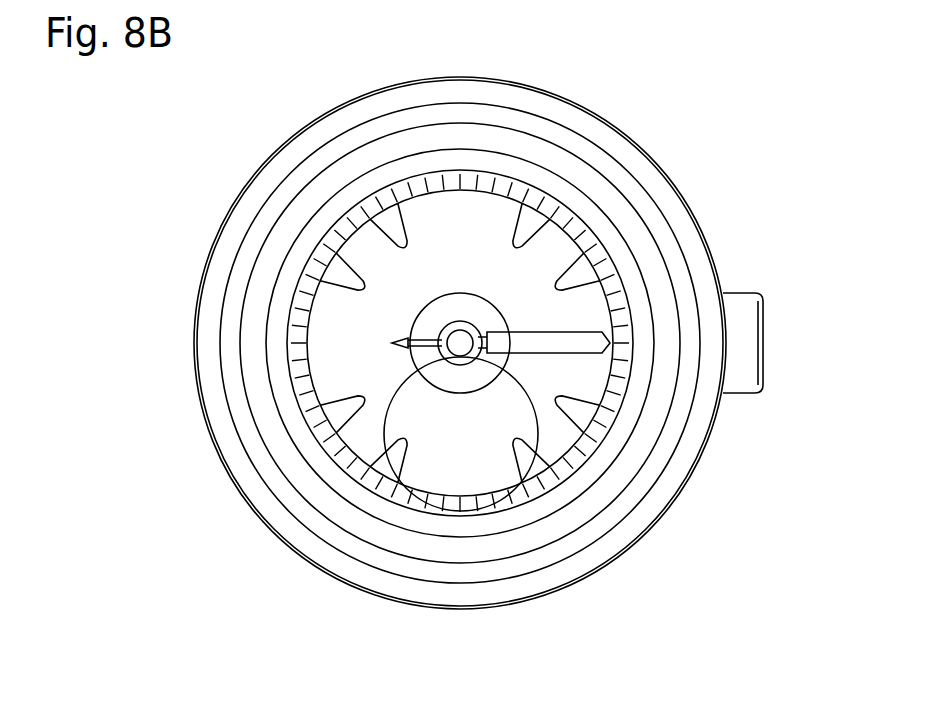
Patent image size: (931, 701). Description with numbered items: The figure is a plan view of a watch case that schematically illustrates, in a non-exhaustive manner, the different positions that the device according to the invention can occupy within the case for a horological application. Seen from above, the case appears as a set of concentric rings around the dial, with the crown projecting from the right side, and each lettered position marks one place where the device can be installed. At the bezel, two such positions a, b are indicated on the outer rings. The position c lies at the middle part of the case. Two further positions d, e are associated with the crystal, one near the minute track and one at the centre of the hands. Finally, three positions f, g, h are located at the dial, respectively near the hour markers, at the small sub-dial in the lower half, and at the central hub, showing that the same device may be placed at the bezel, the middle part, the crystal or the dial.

The position at the bezel a is at (680, 187).
The position at the bezel b is at (567, 137).
The position at the middle part c is at (692, 242).
The position at the crystal d is at (476, 165).
The position at the crystal e is at (585, 397).
The position at the dial f is at (418, 183).
The position at the dial g is at (507, 470).
The position at the dial h is at (480, 374).